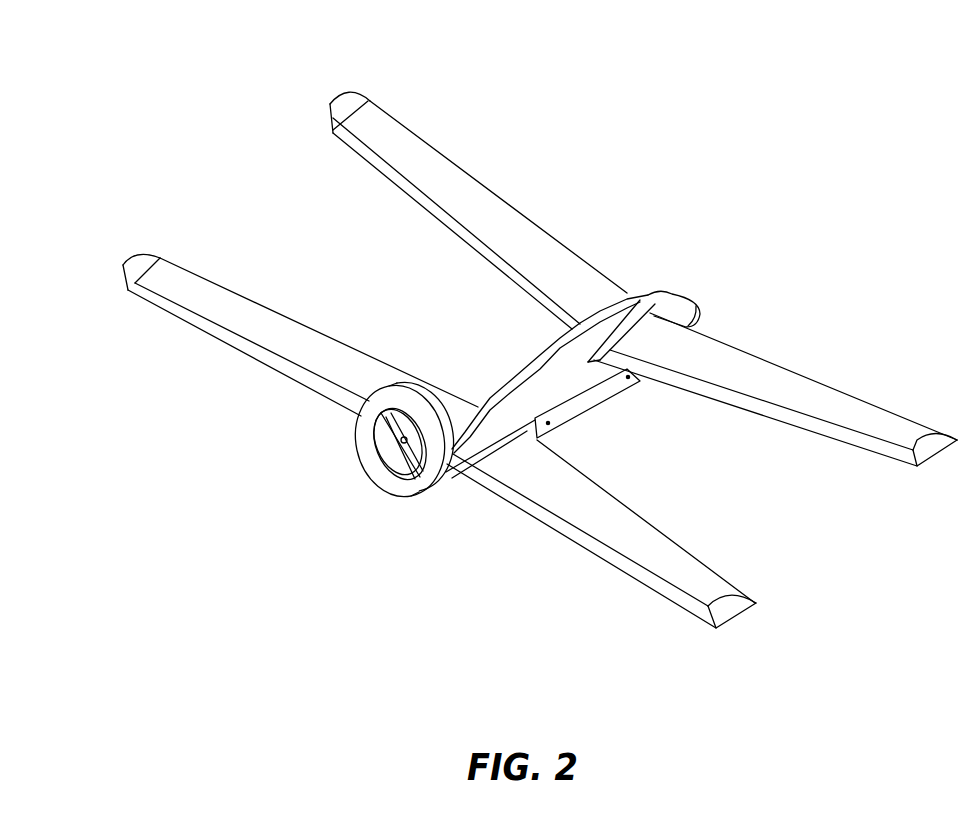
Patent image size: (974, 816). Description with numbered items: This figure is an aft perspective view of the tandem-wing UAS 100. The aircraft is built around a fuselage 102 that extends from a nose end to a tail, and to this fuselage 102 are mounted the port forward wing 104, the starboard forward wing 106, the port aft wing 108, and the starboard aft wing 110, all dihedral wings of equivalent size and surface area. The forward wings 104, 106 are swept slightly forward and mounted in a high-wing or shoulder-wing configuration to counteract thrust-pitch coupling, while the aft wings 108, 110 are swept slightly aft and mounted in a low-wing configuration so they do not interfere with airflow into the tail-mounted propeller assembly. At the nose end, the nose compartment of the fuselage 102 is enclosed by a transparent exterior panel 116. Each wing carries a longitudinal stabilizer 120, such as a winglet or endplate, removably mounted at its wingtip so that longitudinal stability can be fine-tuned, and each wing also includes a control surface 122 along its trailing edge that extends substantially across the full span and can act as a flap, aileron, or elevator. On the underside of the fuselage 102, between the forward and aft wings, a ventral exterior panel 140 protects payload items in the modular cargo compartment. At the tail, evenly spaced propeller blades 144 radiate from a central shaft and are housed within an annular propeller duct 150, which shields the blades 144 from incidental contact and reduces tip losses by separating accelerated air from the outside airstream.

The tandem-wing UAS 100 is at (68, 85).
The fuselage 102 is at (531, 375).
The port forward wing 104 is at (562, 257).
The starboard forward wing 106 is at (837, 398).
The port aft wing 108 is at (287, 327).
The starboard aft wing 110 is at (632, 523).
The transparent exterior panel 116 is at (682, 300).
The longitudinal stabilizer 120 is at (343, 108).
The control surface 122 is at (477, 248).
The ventral exterior panel 140 is at (593, 398).
The propeller blades 144 is at (380, 427).
The propeller duct 150 is at (392, 477).